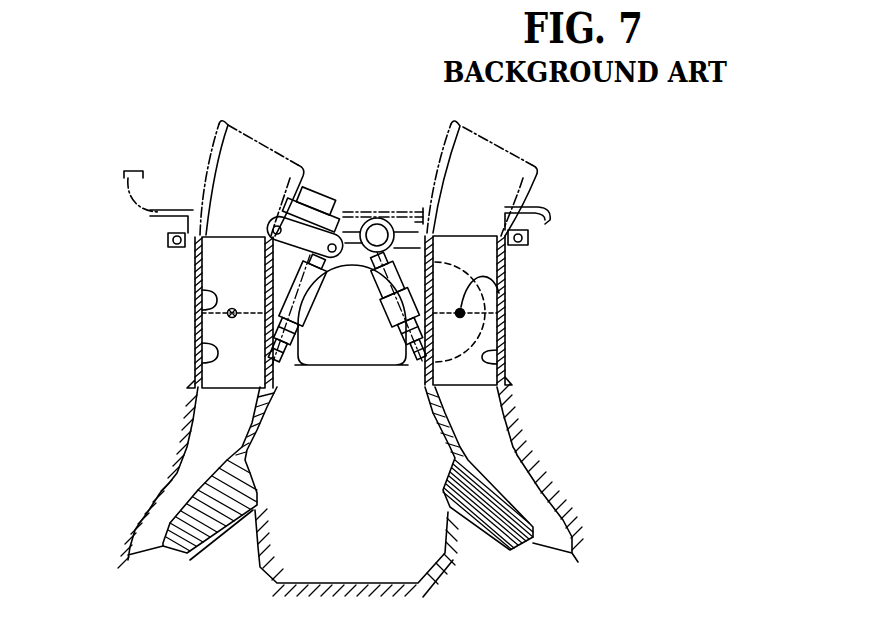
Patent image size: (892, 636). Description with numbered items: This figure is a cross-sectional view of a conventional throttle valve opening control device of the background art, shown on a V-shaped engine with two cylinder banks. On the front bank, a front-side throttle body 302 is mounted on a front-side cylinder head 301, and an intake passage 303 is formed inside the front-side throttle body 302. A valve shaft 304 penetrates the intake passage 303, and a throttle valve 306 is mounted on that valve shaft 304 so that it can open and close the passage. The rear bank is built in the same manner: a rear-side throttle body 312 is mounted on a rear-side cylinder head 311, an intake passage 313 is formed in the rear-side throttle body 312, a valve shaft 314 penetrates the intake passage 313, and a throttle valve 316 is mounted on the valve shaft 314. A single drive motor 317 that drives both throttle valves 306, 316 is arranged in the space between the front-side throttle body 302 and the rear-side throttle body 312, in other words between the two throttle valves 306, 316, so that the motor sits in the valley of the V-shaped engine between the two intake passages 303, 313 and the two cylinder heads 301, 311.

The front-side cylinder head 301 is at (248, 468).
The front-side throttle body 302 is at (197, 337).
The intake passage 303 is at (190, 372).
The valve shaft 304 is at (225, 308).
The throttle valve 306 is at (202, 289).
The rear-side cylinder head 311 is at (446, 474).
The rear-side throttle body 312 is at (516, 322).
The intake passage 313 is at (506, 362).
The valve shaft 314 is at (478, 283).
The throttle valve 316 is at (499, 293).
The drive motor 317 is at (339, 368).